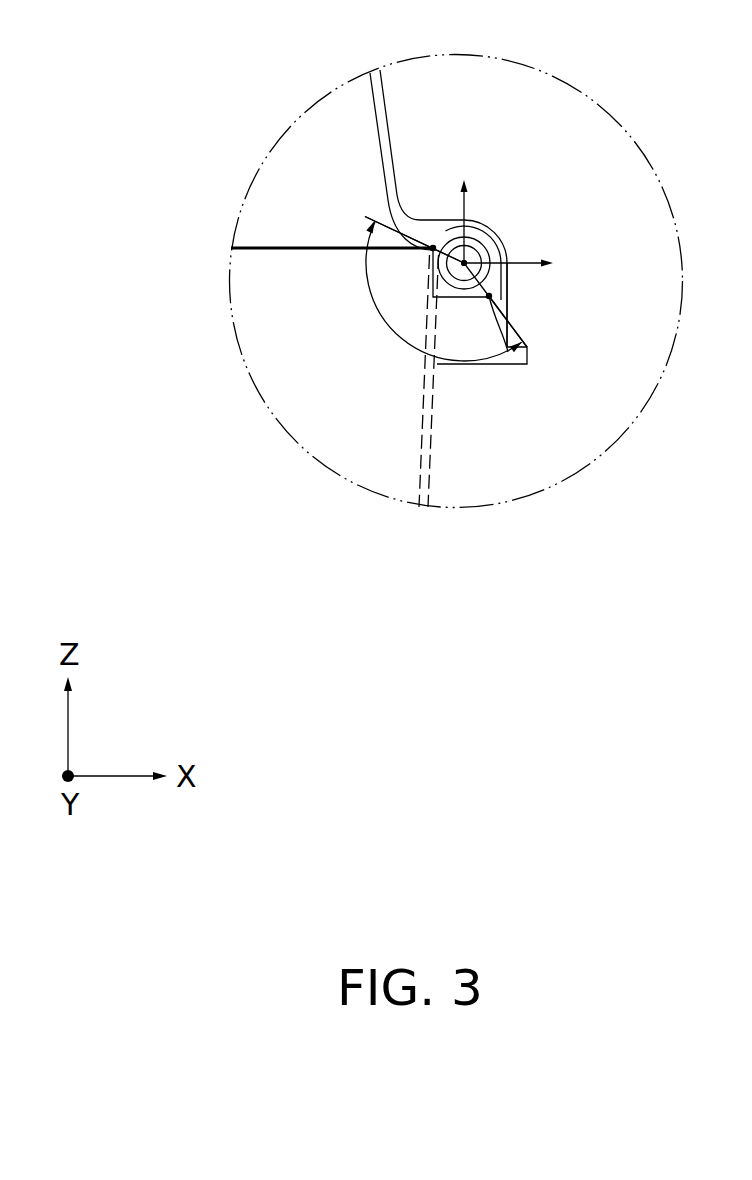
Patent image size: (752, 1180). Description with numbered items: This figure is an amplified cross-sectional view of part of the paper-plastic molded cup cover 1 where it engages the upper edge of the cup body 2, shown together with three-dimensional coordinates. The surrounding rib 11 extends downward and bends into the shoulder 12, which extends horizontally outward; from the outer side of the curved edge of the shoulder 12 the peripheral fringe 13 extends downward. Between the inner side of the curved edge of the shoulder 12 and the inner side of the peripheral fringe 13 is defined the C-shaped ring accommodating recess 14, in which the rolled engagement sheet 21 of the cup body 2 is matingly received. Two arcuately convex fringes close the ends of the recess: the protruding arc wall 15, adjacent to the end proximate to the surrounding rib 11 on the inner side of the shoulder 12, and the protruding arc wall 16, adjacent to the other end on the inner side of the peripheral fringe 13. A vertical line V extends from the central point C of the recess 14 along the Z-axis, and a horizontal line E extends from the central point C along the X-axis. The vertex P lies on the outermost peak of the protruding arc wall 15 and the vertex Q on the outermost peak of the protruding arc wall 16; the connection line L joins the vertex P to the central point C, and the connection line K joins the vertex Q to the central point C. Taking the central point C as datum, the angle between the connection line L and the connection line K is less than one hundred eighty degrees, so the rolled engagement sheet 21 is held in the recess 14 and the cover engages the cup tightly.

The paper-plastic molded cup cover 1 is at (306, 120).
The cup body 2 is at (430, 431).
The surrounding rib 11 is at (382, 111).
The shoulder 12 is at (460, 219).
The peripheral fringe 13 is at (510, 315).
The C-shaped ring accommodating recess 14 is at (508, 240).
The protruding arc wall 15 is at (365, 264).
The protruding arc wall 16 is at (489, 298).
The rolled engagement sheet 21 is at (503, 224).
The vertex P is at (433, 246).
The vertex Q is at (491, 297).
The central point C is at (496, 256).
The vertical line V is at (470, 204).
The horizontal line E is at (523, 264).
The connection line L is at (451, 243).
The connection line K is at (508, 278).